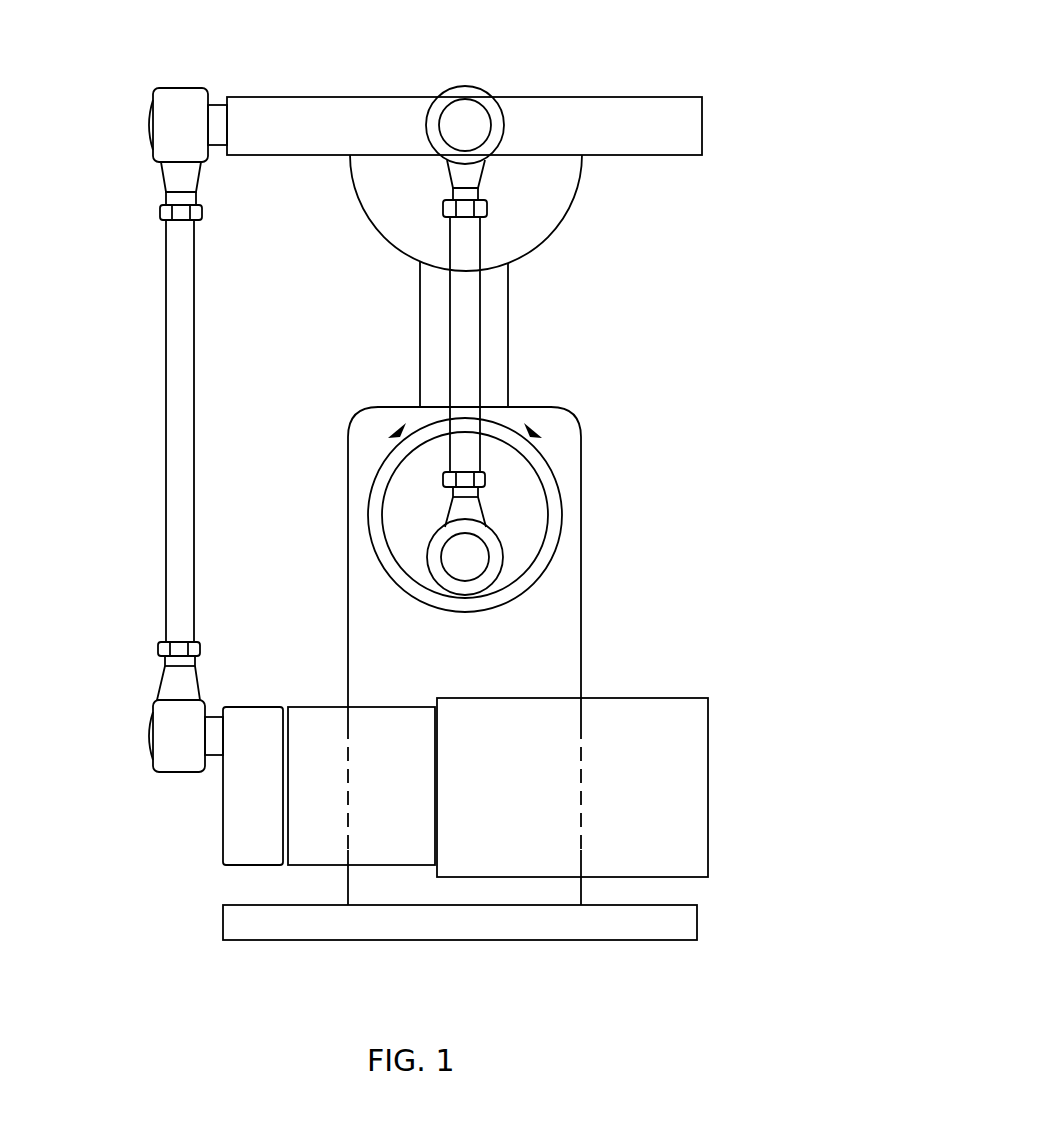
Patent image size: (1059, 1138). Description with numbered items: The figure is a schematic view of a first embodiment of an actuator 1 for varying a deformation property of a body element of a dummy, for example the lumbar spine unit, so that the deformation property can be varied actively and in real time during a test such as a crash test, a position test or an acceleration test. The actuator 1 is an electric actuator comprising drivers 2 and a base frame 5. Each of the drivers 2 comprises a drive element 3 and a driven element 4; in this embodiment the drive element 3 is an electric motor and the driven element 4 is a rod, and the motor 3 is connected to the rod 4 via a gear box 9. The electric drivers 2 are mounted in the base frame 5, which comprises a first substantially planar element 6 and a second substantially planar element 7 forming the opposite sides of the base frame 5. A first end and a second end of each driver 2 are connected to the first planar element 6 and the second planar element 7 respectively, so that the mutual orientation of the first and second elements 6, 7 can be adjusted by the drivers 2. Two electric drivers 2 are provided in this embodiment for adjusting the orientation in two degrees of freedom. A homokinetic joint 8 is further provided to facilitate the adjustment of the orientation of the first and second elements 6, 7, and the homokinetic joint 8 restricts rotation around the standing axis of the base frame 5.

The actuator 1 is at (140, 460).
The drivers 2 is at (541, 405).
The drive element 3 is at (527, 535).
The driven element 4 is at (182, 460).
The base frame 5 is at (716, 163).
The first planar element 6 is at (654, 120).
The second planar element 7 is at (685, 927).
The homokinetic joint 8 is at (521, 220).
The gear box 9 is at (667, 832).